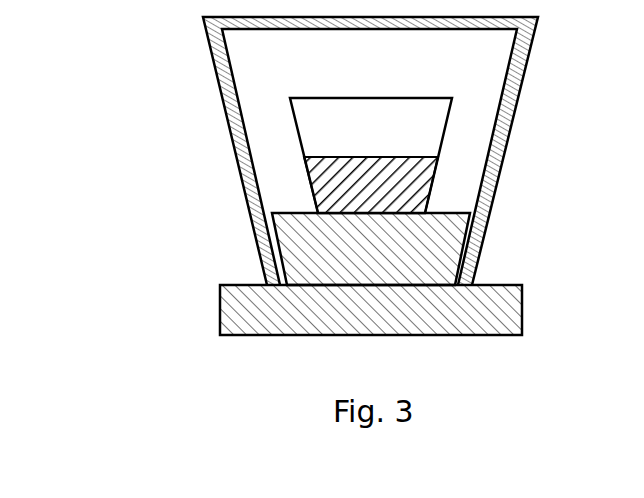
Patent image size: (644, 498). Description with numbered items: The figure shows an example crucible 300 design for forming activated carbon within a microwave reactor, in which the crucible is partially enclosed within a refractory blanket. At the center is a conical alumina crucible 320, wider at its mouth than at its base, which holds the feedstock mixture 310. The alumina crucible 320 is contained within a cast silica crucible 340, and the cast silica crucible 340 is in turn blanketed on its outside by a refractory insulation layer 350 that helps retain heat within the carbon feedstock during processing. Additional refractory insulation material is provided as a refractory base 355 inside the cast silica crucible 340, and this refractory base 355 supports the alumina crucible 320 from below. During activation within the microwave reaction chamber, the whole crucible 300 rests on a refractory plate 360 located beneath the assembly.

The crucible 300 is at (203, 183).
The feedstock mixture 310 is at (433, 185).
The conical alumina crucible 320 is at (296, 128).
The cast silica crucible 340 is at (228, 53).
The refractory insulation layer 350 is at (518, 93).
The refractory base 355 is at (432, 240).
The refractory plate 360 is at (460, 313).